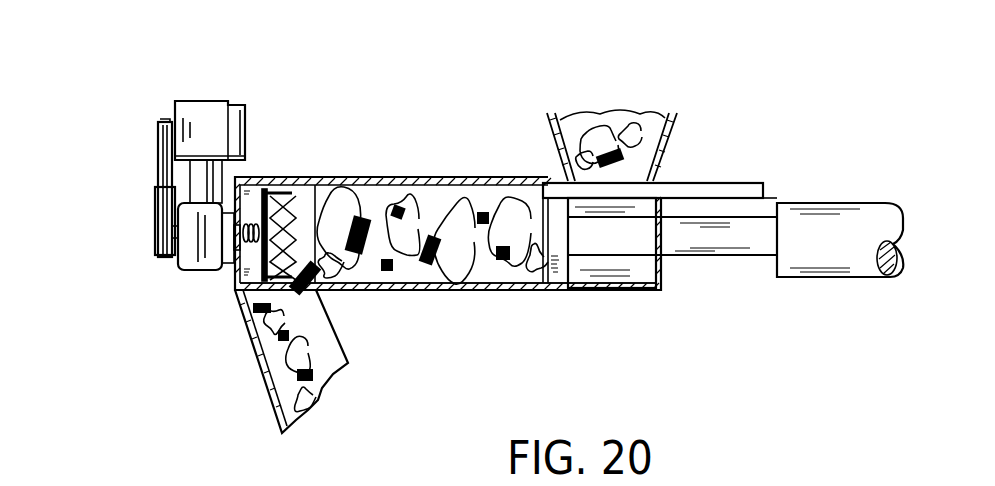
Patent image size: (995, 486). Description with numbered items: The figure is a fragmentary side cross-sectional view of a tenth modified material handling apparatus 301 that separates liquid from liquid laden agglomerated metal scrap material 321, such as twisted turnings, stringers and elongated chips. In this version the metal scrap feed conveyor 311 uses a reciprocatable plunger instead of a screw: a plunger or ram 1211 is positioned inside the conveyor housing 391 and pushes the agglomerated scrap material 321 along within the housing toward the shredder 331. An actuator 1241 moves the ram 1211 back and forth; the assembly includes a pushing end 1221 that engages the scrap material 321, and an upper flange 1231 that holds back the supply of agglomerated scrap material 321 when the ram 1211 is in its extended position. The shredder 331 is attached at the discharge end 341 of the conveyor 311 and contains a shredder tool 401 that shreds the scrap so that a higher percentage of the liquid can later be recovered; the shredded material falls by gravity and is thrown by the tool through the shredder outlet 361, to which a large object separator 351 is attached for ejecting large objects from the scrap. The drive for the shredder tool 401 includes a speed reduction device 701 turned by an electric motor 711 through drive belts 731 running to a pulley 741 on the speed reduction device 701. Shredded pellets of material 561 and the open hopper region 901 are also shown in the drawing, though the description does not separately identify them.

The material handling apparatus 301 is at (752, 105).
The metal scrap feed conveyor 311 is at (394, 325).
The agglomerated scrap material 321 is at (472, 177).
The shredder 331 is at (306, 146).
The discharge end 341 is at (318, 205).
The large object separator 351 is at (265, 390).
The shredder outlet 361 is at (242, 313).
The conveyor housing 391 is at (467, 292).
The shredder tool 401 is at (270, 189).
The pellets 561 is at (362, 213).
The speed reduction device 701 is at (197, 272).
The electric motor 711 is at (175, 105).
The drive belts 731 is at (157, 157).
The pulley 741 is at (154, 222).
The upper hopper 901 is at (483, 216).
The plunger or ram 1211 is at (596, 255).
The pushing end 1221 is at (560, 293).
The upper flange 1231 is at (678, 185).
The actuator 1241 is at (837, 277).